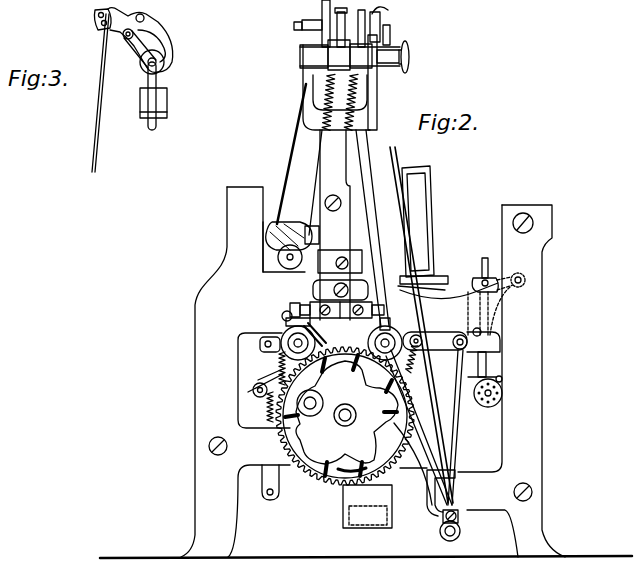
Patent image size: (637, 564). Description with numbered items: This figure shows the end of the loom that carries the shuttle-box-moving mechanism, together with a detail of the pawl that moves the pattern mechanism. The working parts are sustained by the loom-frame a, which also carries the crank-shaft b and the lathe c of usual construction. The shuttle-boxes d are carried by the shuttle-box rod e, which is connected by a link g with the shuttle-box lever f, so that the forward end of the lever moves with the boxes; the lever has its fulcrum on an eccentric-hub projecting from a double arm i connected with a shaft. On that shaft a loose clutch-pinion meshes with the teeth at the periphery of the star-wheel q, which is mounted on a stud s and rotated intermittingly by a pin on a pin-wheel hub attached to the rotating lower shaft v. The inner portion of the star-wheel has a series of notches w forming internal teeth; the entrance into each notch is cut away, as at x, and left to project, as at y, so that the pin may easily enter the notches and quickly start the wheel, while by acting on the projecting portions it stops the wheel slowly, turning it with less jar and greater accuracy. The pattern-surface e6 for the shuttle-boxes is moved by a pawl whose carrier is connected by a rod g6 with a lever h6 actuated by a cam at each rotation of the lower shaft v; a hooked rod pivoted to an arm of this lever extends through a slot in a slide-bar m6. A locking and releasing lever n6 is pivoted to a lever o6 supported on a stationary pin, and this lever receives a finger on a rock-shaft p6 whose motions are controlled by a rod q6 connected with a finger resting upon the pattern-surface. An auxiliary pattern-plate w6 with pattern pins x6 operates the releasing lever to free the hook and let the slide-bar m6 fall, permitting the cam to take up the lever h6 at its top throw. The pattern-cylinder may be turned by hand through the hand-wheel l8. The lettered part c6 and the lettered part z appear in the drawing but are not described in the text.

In FIG. 2, the loom-frame a is at (366, 344).
In FIG. 2, the crank-shaft b is at (277, 258).
In FIG. 2, the lathe c is at (400, 146).
In FIG. 3, the rod c6 is at (89, 128).
In FIG. 2, the shuttle-boxes d is at (418, 221).
In FIG. 2, the shuttle-box rod e is at (425, 359).
In FIG. 2, the pattern-surface e6 is at (320, 72).
In FIG. 2, the shuttle-box lever f is at (262, 382).
In FIG. 2, the link g is at (450, 445).
In FIG. 3, the rod g6 is at (160, 34).
In FIG. 2, the rod g6 is at (291, 158).
In FIG. 2, the lever h6 is at (268, 394).
In FIG. 2, the double arm i is at (290, 308).
In FIG. 2, the hand-wheel l8 is at (410, 57).
In FIG. 2, the slide-bar m6 is at (479, 261).
In FIG. 2, the locking and releasing lever n6 is at (473, 290).
In FIG. 2, the lever o6 is at (498, 282).
In FIG. 2, the rock-shaft p6 is at (438, 270).
In FIG. 2, the star-wheel q is at (285, 440).
In FIG. 2, the rod q6 is at (318, 160).
In FIG. 2, the stud s is at (341, 415).
In FIG. 2, the lower shaft v is at (310, 403).
In FIG. 2, the notches w is at (302, 450).
In FIG. 2, the auxiliary pattern-plate w6 is at (504, 395).
In FIG. 2, the cut-away entrance x is at (310, 440).
In FIG. 2, the pattern pins x6 is at (502, 378).
In FIG. 2, the projecting portion y is at (373, 440).
In FIG. 2, the bracket z is at (358, 502).